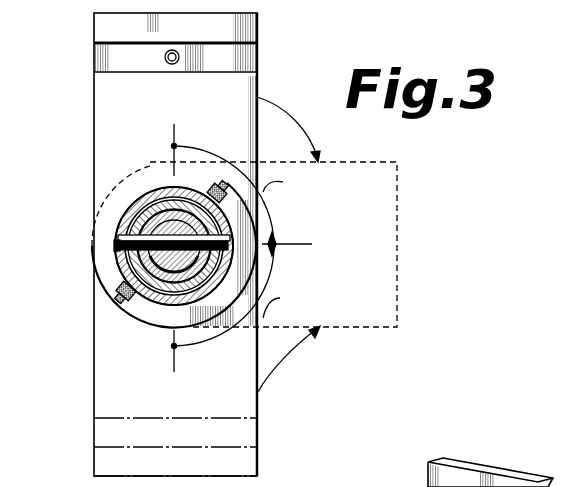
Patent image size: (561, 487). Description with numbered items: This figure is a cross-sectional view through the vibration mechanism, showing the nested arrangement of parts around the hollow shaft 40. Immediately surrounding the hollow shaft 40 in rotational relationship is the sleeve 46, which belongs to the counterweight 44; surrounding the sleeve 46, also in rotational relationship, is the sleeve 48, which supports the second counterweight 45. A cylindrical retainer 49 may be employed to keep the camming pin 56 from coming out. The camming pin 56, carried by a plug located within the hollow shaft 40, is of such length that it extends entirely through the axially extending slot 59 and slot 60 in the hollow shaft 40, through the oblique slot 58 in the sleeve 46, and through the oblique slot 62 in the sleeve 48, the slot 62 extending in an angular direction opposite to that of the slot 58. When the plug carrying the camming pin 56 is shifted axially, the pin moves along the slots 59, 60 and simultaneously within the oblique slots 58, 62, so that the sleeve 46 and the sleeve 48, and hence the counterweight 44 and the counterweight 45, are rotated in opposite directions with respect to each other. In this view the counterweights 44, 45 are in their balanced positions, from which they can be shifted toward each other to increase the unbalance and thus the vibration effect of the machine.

The hollow shaft 40 is at (237, 238).
The counterweight 44 is at (257, 86).
The second counterweight 45 is at (262, 412).
The sleeve 46 is at (140, 186).
The sleeve 48 is at (127, 206).
The cylindrical retainer 49 is at (128, 184).
The camming pin 56 is at (119, 245).
The oblique slot 58 is at (128, 268).
The axially extending slot 59 is at (213, 318).
The axially extending slot 60 is at (137, 306).
The oblique slot 62 is at (128, 292).